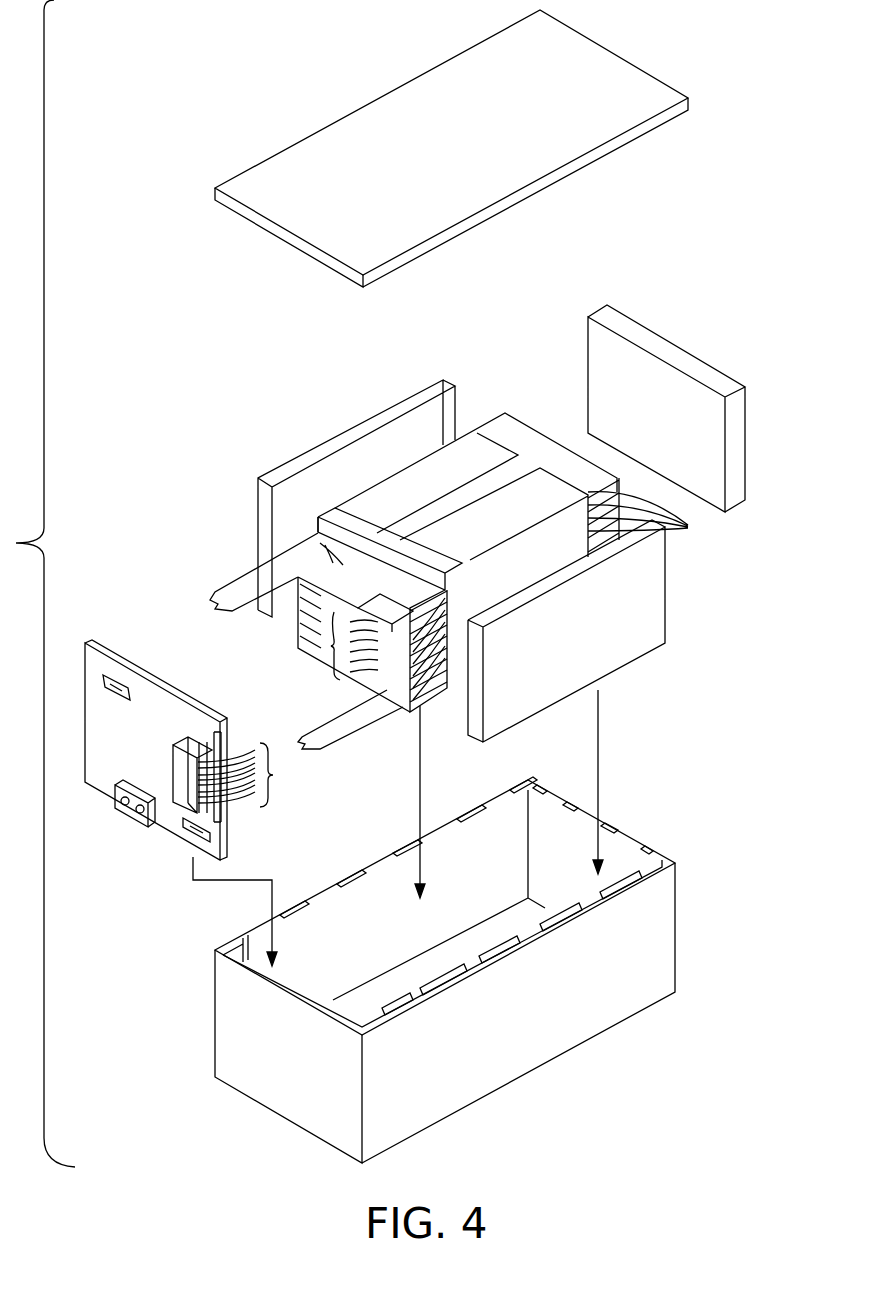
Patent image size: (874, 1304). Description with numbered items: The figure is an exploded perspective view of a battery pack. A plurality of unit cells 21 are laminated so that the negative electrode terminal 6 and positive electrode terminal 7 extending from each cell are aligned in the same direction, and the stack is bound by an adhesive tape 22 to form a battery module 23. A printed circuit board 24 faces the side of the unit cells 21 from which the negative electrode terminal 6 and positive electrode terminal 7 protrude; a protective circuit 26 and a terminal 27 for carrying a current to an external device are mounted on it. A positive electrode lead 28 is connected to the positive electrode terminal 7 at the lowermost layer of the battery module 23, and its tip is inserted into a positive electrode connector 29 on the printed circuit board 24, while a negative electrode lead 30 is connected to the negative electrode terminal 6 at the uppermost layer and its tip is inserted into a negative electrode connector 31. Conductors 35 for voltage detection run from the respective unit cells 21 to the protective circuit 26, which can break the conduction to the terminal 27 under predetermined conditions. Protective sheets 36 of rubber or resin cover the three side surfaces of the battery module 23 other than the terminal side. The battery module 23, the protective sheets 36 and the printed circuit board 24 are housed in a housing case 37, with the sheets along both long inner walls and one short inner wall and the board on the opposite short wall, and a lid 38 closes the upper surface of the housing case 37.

The lid 38 is at (632, 86).
The housing case 37 is at (665, 933).
The protective sheets 36 is at (311, 454).
The battery module 23 is at (423, 478).
The adhesive tape 22 is at (532, 498).
The unit cells 21 is at (656, 517).
The negative electrode terminal 6 is at (318, 517).
The positive electrode terminal 7 is at (386, 600).
The negative electrode lead 30 is at (230, 584).
The positive electrode lead 28 is at (340, 734).
The conductors for detection of a voltage 35 is at (323, 645).
The printed circuit board 24 is at (117, 650).
The negative electrode connector 31 is at (123, 682).
The protective circuit 26 is at (187, 740).
The terminal for carrying a current to an external device 27 is at (138, 820).
The positive electrode connector 29 is at (210, 838).